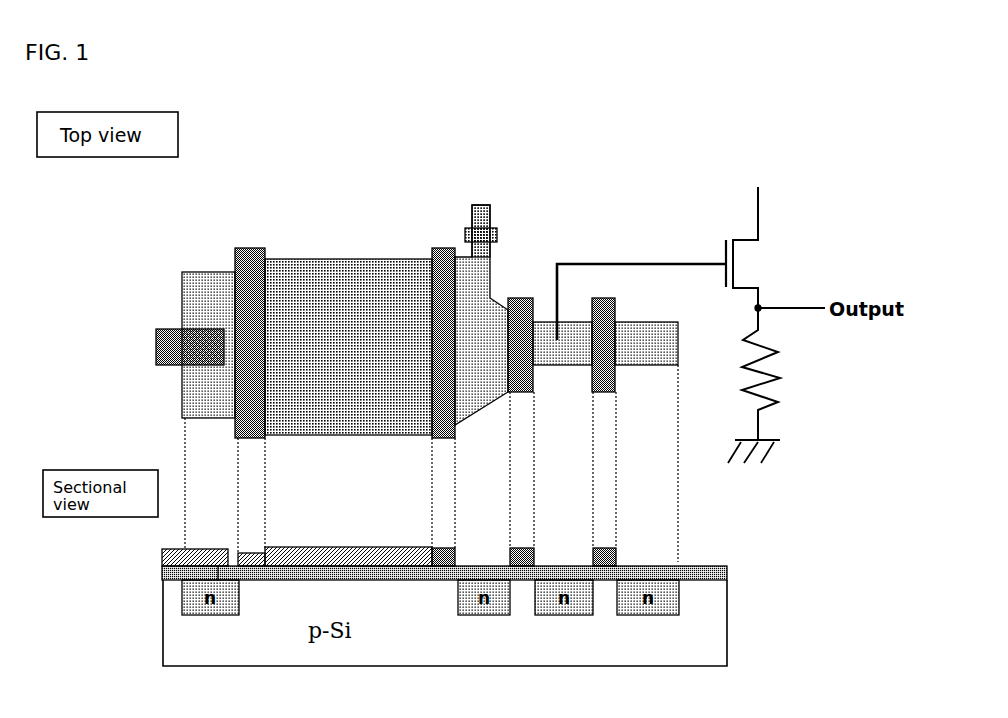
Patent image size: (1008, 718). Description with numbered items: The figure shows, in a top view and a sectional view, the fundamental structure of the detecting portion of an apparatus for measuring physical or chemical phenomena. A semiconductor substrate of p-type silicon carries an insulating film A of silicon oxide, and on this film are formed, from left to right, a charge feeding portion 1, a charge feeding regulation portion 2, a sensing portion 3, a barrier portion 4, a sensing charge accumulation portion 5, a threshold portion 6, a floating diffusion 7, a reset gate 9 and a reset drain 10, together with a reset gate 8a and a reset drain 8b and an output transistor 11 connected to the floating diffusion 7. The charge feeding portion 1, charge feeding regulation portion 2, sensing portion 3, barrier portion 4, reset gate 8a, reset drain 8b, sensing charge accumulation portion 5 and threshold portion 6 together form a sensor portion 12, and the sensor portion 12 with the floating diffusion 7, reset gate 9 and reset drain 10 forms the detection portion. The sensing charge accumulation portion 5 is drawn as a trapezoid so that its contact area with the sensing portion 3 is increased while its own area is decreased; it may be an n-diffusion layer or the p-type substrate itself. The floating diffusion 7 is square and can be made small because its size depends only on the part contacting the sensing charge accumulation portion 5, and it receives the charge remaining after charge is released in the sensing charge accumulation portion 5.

The charge feeding portion 1 is at (167, 330).
The charge feeding regulation portion 2 is at (252, 248).
The sensing portion 3 is at (335, 259).
The barrier portion 4 is at (443, 248).
The sensing charge accumulation portion 5 is at (492, 297).
The threshold portion 6 is at (523, 297).
The floating diffusion 7 is at (576, 322).
The reset gate 8a is at (498, 232).
The reset drain 8b is at (488, 205).
The reset gate 9 is at (608, 298).
The reset drain 10 is at (640, 322).
The output transistor 11 is at (735, 262).
The sensor portion 12 is at (607, 150).
The insulating film A is at (728, 560).